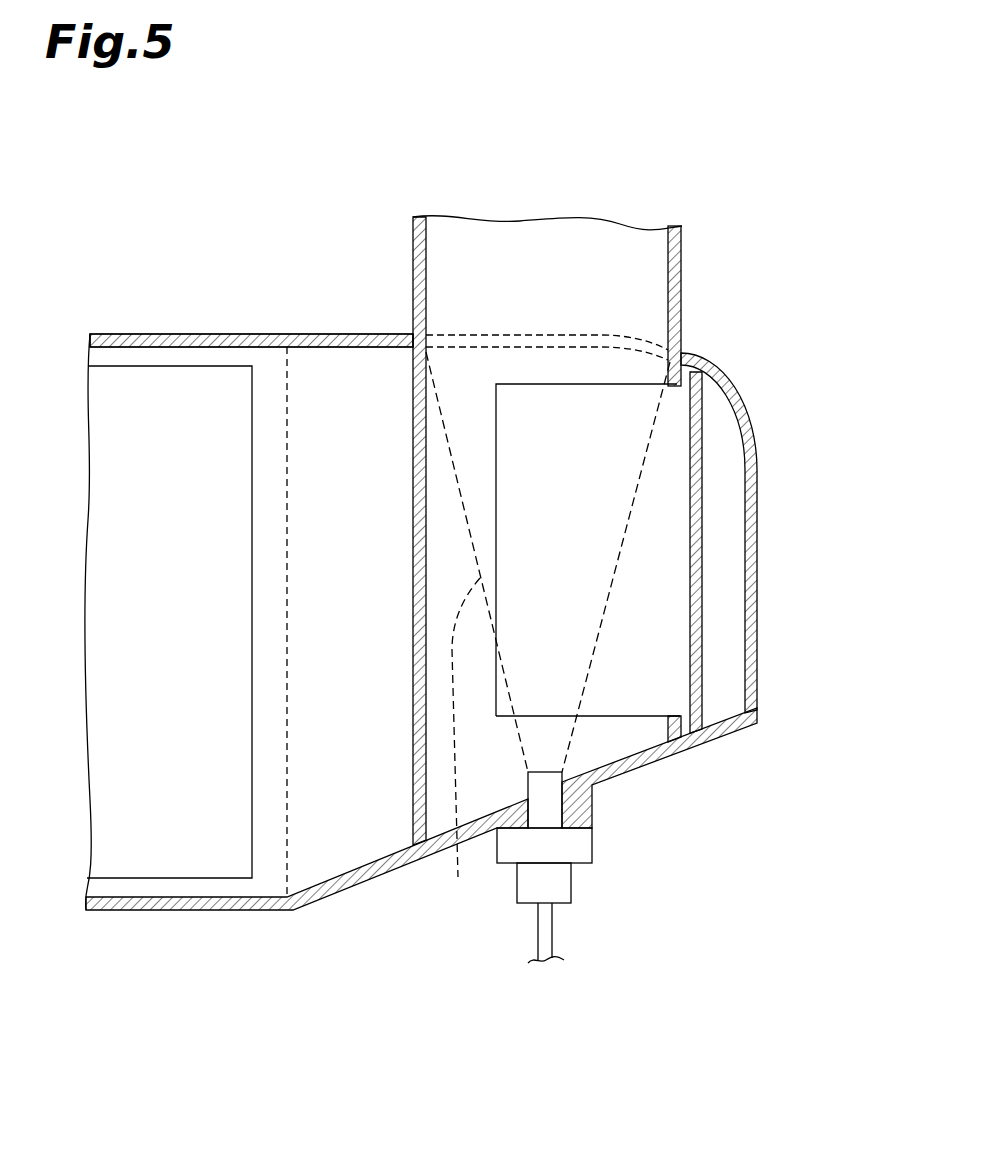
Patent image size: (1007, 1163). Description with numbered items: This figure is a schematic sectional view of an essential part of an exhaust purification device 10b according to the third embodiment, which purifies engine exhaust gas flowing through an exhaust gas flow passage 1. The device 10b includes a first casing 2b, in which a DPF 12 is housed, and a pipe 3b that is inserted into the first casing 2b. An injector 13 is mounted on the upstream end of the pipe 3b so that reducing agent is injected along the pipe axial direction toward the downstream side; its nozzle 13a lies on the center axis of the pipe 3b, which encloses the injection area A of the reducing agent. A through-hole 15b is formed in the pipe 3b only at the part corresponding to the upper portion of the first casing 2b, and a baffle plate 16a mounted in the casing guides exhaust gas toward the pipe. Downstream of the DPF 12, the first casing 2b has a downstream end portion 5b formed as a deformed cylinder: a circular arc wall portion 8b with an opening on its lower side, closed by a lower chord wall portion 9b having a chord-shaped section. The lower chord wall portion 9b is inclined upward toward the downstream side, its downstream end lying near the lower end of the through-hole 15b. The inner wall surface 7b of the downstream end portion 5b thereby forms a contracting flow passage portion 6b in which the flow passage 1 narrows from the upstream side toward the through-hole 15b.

The exhaust purification device 10b is at (722, 162).
The exhaust gas flow passage 1 is at (336, 622).
The first casing 2b is at (198, 325).
The pipe 3b is at (692, 274).
The downstream end portion 5b is at (306, 591).
The contracting flow passage portion 6b is at (385, 636).
The inner wall surface 7b is at (376, 348).
The circular arc wall portion 8b is at (328, 335).
The lower chord wall portion 9b is at (340, 888).
The DPF 12 is at (138, 366).
The injector 13 is at (572, 883).
The nozzle 13a is at (552, 803).
The through-hole 15b is at (660, 554).
The baffle plate 16a is at (702, 477).
The injection area A is at (464, 743).